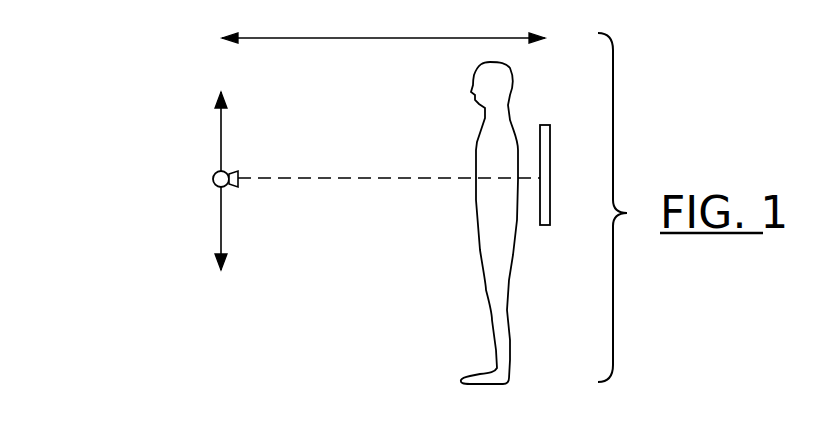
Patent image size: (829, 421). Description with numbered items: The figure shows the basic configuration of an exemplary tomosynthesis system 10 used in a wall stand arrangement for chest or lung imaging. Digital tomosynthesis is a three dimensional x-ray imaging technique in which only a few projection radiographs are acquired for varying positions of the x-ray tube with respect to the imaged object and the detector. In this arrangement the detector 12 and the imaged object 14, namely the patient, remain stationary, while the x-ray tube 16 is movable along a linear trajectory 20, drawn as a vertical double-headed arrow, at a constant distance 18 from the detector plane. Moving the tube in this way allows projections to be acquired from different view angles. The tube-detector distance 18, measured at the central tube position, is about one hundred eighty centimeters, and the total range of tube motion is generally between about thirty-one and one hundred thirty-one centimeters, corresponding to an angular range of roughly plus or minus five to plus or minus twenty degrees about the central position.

The tomosynthesis system 10 is at (170, 192).
The detector 12 is at (551, 167).
The imaged object 14 is at (475, 157).
The x-ray tube 16 is at (213, 173).
The tube-detector distance 18 is at (360, 37).
The linear trajectory 20 is at (223, 131).